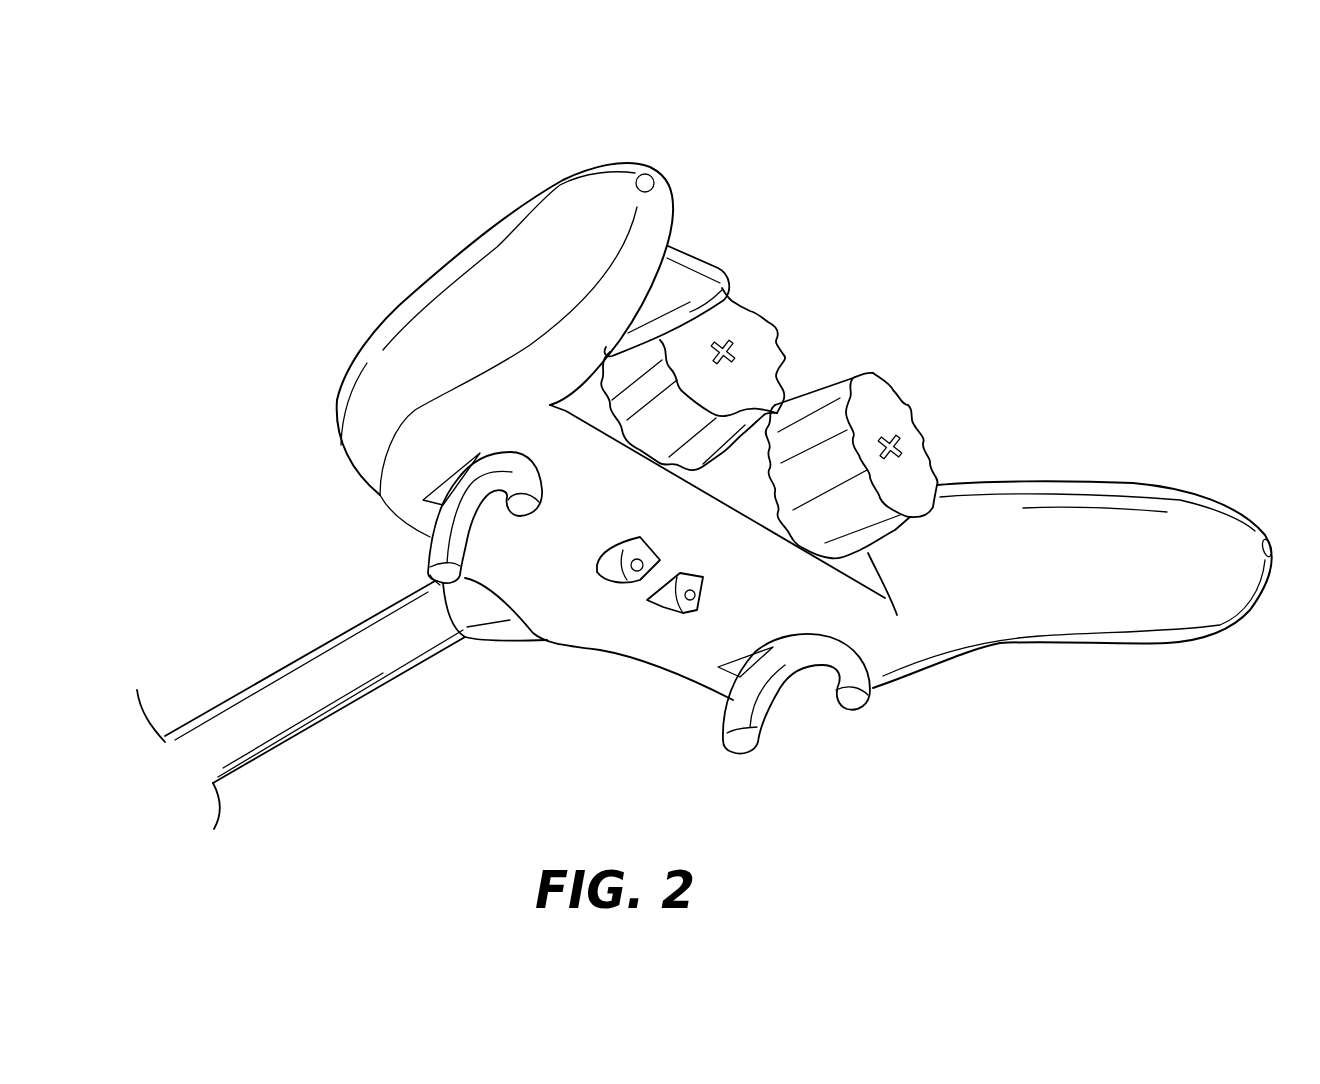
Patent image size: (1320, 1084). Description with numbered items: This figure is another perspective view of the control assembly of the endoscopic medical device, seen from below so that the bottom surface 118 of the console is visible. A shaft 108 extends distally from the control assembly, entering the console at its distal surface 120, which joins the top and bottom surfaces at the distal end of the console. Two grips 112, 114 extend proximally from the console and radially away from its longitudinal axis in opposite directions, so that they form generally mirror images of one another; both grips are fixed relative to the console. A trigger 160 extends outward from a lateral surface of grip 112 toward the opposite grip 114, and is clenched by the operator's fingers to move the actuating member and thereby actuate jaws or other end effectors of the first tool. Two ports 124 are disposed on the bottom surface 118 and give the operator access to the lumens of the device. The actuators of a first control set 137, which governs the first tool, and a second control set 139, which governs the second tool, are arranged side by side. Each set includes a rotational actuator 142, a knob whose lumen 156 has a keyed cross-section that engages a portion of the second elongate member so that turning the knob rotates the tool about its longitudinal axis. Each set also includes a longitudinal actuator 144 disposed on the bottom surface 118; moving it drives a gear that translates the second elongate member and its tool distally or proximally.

The shaft 108 is at (305, 655).
The grip 112 is at (498, 207).
The grip 114 is at (1122, 643).
The bottom surface 118 is at (667, 647).
The distal surface 120 is at (357, 477).
The ports 124 is at (662, 605).
The first control set 137 is at (418, 320).
The second control set 139 is at (1073, 647).
The rotational actuator 142 is at (775, 338).
The longitudinal actuator 144 is at (425, 547).
The lumen 156 is at (723, 338).
The trigger 160 is at (693, 258).